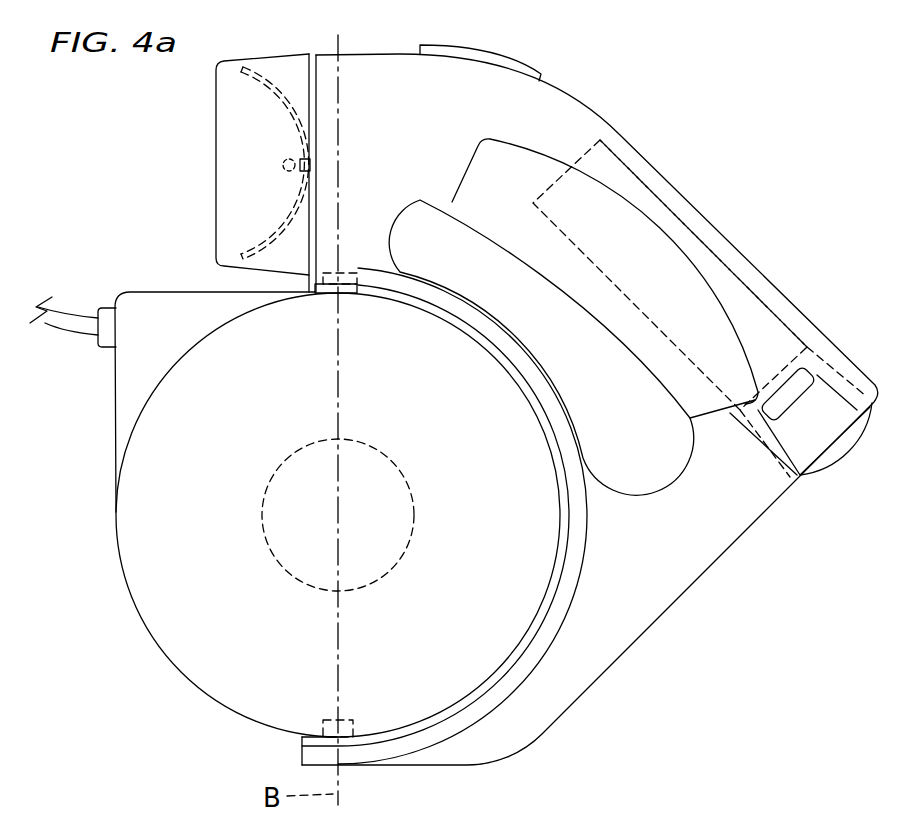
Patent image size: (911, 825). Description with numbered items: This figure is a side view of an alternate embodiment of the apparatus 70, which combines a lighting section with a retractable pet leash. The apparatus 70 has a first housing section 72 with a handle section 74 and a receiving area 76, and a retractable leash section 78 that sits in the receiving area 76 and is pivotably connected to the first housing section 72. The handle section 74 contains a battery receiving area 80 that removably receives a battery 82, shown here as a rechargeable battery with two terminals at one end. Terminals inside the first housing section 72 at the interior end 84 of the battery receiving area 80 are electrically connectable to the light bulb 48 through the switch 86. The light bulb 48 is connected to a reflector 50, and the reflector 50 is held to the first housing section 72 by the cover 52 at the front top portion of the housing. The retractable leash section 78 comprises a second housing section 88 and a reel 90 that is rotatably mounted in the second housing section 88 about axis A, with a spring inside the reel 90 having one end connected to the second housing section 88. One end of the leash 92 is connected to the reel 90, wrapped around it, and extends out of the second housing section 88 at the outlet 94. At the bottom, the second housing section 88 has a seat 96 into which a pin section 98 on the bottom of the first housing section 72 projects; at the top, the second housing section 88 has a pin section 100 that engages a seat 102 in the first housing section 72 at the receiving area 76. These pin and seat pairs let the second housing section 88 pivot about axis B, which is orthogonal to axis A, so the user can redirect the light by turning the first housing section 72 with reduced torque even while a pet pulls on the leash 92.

The light bulb 48 is at (283, 166).
The reflector 50 is at (269, 82).
The cover 52 is at (215, 103).
The apparatus 70 is at (142, 160).
The first housing section 72 is at (660, 177).
The handle section 74 is at (760, 274).
The receiving area 76 is at (503, 670).
The retractable leash section 78 is at (167, 658).
The battery receiving area 80 is at (705, 244).
The battery 82 is at (832, 465).
The interior end 84 is at (583, 152).
The switch 86 is at (531, 75).
The second housing section 88 is at (133, 607).
The reel 90 is at (265, 526).
The leash 92 is at (78, 330).
The outlet 94 is at (98, 312).
The seat 96 is at (318, 725).
The pin section 98 is at (353, 722).
The pin section 100 is at (347, 295).
The seat 102 is at (358, 282).